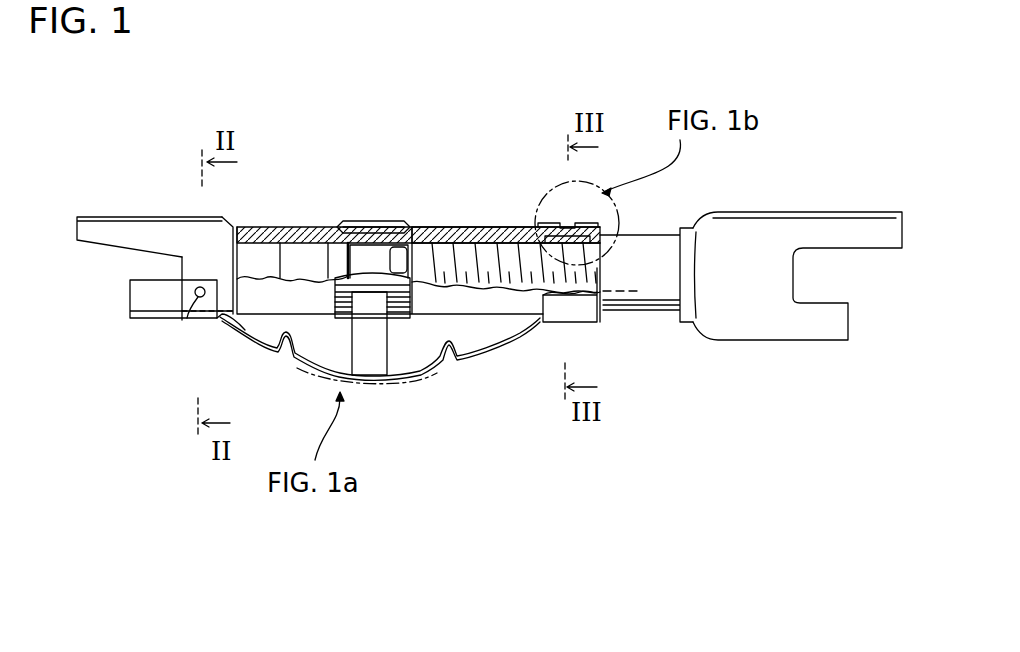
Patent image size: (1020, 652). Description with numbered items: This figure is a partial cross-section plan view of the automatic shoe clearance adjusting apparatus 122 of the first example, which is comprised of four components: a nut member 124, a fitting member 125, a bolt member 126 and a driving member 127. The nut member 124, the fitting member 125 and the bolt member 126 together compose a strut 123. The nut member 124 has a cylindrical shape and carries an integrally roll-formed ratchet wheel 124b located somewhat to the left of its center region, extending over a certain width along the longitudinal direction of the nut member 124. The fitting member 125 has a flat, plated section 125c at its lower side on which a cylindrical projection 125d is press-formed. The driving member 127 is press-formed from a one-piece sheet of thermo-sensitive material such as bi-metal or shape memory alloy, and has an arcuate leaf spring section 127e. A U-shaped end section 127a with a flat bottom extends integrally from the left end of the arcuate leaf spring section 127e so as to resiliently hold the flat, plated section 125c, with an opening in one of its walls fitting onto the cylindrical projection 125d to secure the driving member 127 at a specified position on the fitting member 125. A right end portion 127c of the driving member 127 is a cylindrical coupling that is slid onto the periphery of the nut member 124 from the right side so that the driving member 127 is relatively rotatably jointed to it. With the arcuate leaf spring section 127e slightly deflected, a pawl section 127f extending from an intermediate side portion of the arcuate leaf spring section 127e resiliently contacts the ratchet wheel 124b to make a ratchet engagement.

The automatic shoe clearance adjusting apparatus 122 is at (522, 367).
The strut 123 is at (498, 227).
The nut member 124 is at (298, 228).
The ratchet wheel 124b is at (362, 221).
The fitting member 125 is at (190, 217).
The flat, plated section 125c is at (127, 227).
The cylindrical projection 125d is at (185, 323).
The bolt member 126 is at (853, 213).
The driving member 127 is at (485, 357).
The U-shaped end section 127a is at (222, 322).
The right end portion 127c is at (592, 323).
The arcuate leaf spring section 127e is at (430, 373).
The pawl section 127f is at (375, 347).